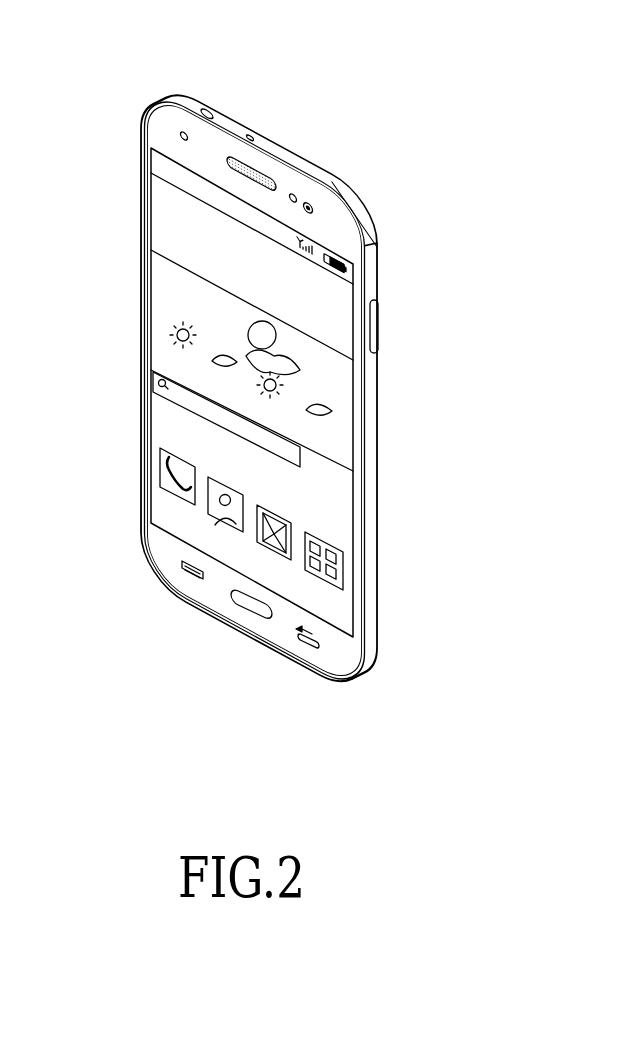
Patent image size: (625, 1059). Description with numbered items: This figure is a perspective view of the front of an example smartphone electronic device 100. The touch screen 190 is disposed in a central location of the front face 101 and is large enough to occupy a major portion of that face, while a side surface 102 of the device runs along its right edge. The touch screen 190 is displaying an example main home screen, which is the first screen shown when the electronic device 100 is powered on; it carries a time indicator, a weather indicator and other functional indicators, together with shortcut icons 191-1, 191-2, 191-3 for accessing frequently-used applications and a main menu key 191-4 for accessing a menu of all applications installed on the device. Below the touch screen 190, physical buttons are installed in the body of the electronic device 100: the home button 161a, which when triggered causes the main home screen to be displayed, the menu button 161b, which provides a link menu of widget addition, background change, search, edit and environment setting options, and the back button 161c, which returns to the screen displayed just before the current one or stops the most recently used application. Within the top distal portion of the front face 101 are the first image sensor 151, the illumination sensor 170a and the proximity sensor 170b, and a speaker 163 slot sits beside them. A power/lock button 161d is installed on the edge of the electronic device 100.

The electronic device 100 is at (199, 363).
The front face 101 is at (157, 133).
The side surface of housing 102 is at (370, 432).
The first image sensor 151 is at (308, 203).
The home button 161a is at (252, 608).
The menu button 161b is at (182, 565).
The back button 161c is at (310, 645).
The power/lock button 161d is at (378, 328).
The speaker 163 is at (240, 160).
The illumination sensor 170a is at (293, 194).
The proximity sensor 170b is at (181, 134).
The touch screen 190 is at (162, 345).
The shortcut icon 191-1 is at (175, 451).
The shortcut icon 191-2 is at (222, 478).
The shortcut icon 191-3 is at (285, 513).
The main menu key 191-4 is at (323, 541).